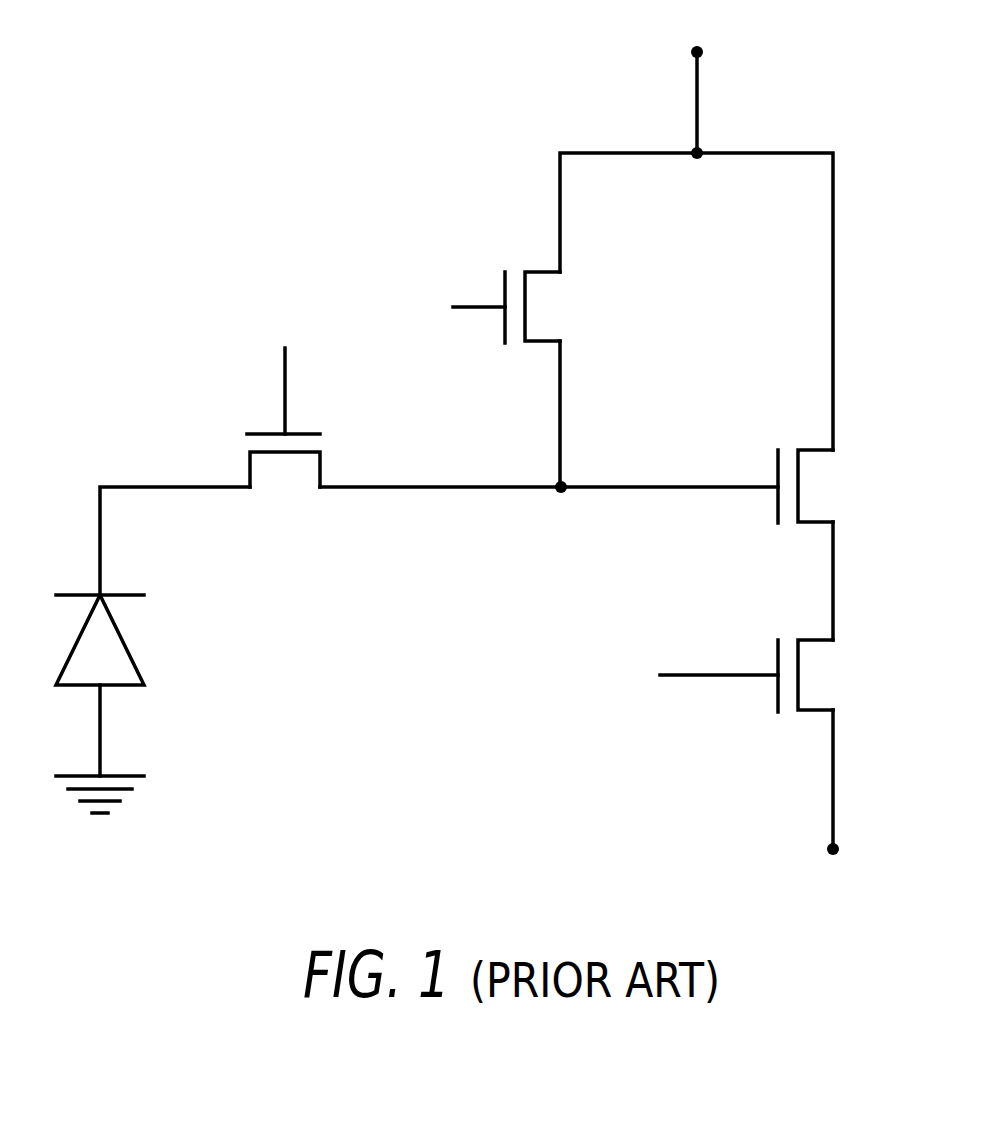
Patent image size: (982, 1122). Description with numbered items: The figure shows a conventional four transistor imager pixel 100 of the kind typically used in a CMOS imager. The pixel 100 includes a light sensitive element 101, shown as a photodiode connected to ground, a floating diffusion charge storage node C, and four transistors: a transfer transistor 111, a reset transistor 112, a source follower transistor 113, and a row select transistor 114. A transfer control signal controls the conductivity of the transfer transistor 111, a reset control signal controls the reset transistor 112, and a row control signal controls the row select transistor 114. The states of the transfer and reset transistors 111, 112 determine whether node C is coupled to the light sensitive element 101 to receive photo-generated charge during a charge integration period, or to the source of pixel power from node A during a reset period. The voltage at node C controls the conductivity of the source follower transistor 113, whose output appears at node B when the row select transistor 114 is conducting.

The imager pixel 100 is at (245, 118).
The light sensitive element 101 is at (100, 657).
The transfer transistor 111 is at (247, 470).
The reset transistor 112 is at (543, 268).
The source follower transistor 113 is at (814, 448).
The row select transistor 114 is at (813, 638).